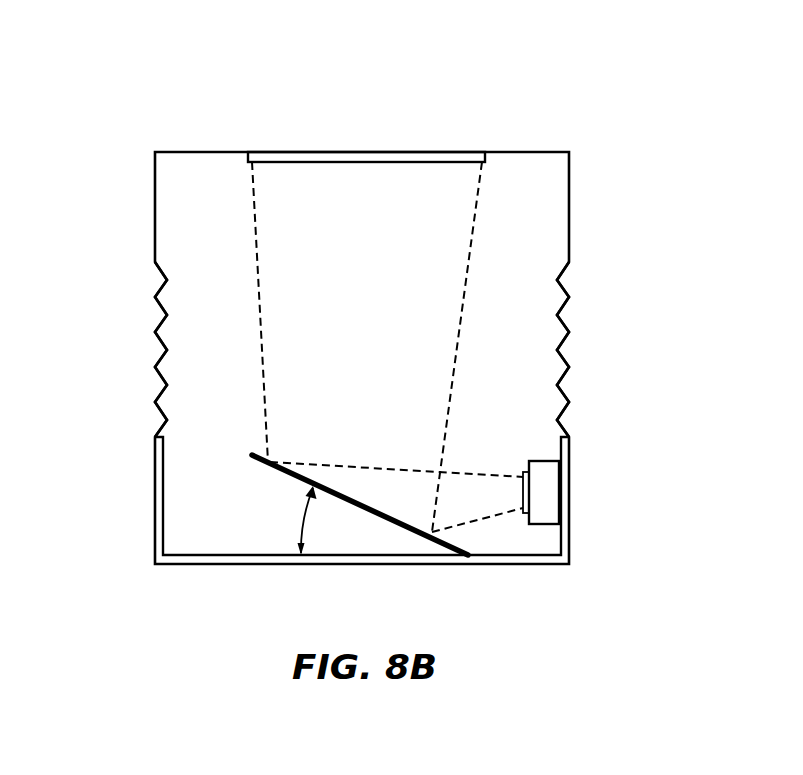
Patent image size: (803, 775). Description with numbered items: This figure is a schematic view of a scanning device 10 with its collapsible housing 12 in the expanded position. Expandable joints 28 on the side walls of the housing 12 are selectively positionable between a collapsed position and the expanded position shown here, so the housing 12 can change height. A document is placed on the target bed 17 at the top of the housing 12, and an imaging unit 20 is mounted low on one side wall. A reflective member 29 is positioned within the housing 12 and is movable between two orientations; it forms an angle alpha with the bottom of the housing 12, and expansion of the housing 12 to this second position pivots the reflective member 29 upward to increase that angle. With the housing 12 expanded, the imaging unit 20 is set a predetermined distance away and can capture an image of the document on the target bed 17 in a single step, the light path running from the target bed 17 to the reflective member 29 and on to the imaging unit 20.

The scanning device 10 is at (250, 86).
The housing 12 is at (569, 225).
The target bed 17 is at (455, 152).
The imaging unit 20 is at (537, 495).
The expandable joints 28 is at (160, 360).
The reflective member 29 is at (288, 476).